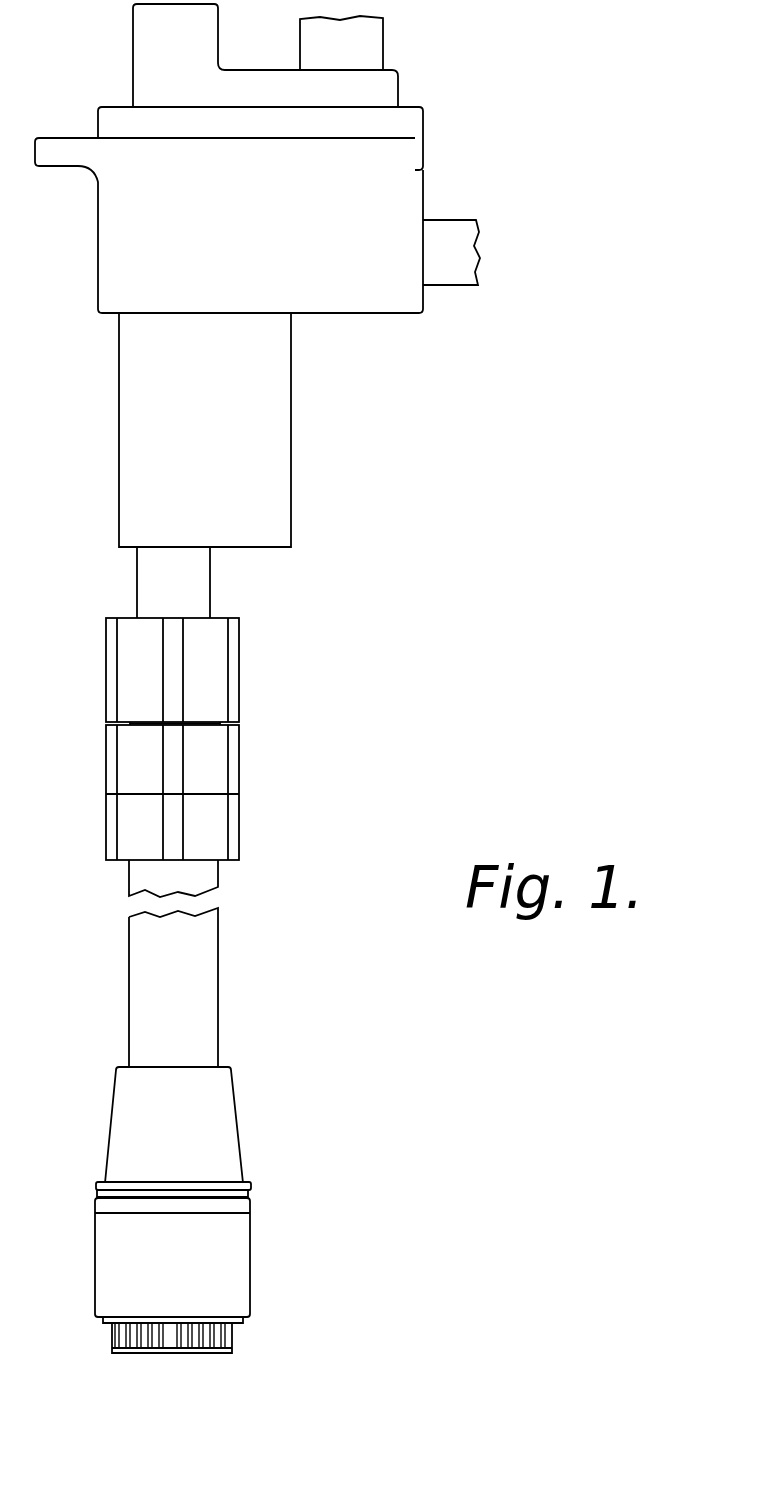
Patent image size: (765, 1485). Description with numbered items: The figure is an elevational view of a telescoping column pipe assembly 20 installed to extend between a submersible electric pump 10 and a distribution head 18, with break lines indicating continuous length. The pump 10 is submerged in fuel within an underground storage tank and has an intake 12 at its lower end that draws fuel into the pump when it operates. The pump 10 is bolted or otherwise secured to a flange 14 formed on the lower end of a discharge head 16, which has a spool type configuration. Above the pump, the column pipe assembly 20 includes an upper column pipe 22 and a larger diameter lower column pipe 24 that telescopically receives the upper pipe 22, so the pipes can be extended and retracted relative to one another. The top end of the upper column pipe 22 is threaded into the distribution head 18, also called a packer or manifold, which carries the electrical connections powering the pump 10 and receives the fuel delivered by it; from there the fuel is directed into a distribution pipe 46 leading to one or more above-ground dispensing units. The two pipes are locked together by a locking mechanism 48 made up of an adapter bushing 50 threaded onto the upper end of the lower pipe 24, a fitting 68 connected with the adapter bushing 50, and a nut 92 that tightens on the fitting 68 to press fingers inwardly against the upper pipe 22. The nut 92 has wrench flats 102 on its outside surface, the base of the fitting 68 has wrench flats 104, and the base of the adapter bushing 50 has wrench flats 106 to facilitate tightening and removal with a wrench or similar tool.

The submersible electric pump 10 is at (254, 1269).
The intake 12 is at (213, 1336).
The flange 14 is at (235, 1185).
The discharge head 16 is at (213, 1123).
The distribution head 18 is at (436, 181).
The telescoping column pipe assembly 20 is at (254, 933).
The upper column pipe 22 is at (195, 589).
The lower column pipe 24 is at (205, 1008).
The distribution pipe 46 is at (443, 275).
The locking mechanism 48 is at (314, 723).
The adapter bushing 50 is at (240, 825).
The fitting 68 is at (240, 779).
The nut 92 is at (240, 665).
The wrench flats 102 is at (213, 699).
The wrench flats 104 is at (222, 769).
The wrench flats 106 is at (217, 842).